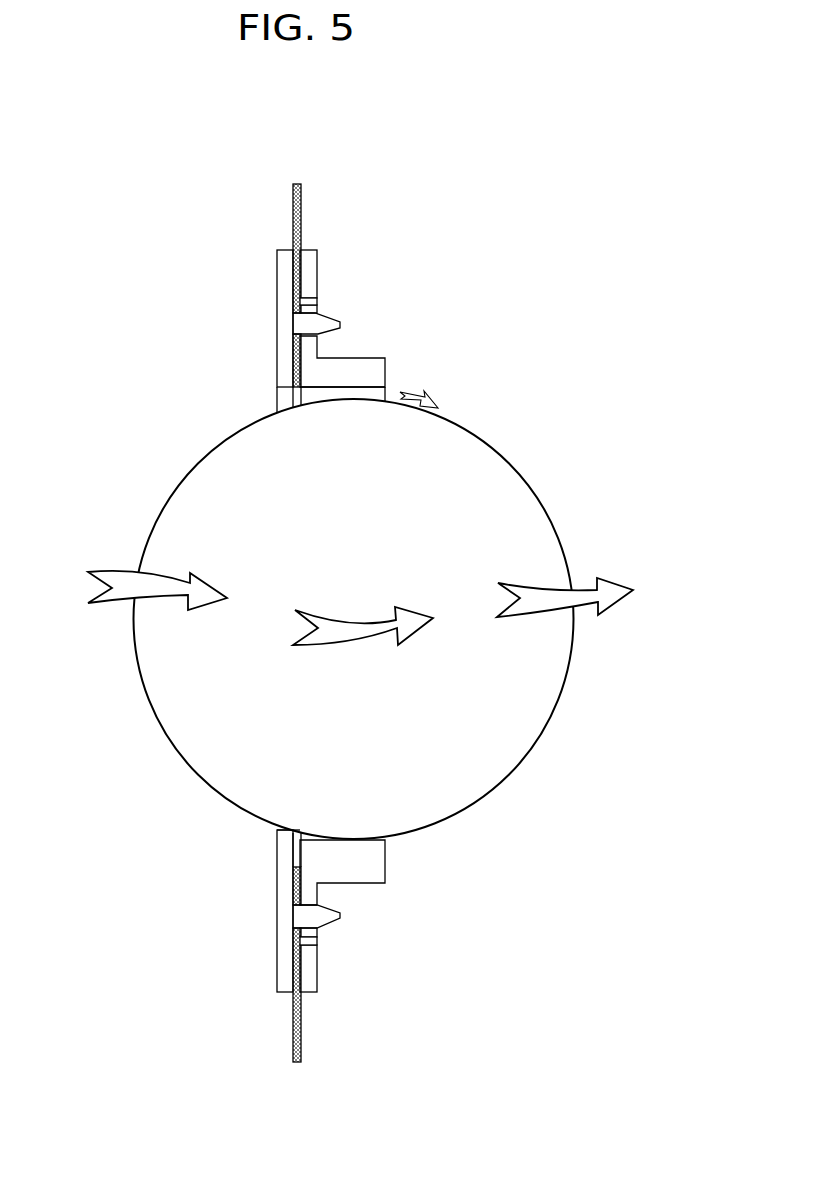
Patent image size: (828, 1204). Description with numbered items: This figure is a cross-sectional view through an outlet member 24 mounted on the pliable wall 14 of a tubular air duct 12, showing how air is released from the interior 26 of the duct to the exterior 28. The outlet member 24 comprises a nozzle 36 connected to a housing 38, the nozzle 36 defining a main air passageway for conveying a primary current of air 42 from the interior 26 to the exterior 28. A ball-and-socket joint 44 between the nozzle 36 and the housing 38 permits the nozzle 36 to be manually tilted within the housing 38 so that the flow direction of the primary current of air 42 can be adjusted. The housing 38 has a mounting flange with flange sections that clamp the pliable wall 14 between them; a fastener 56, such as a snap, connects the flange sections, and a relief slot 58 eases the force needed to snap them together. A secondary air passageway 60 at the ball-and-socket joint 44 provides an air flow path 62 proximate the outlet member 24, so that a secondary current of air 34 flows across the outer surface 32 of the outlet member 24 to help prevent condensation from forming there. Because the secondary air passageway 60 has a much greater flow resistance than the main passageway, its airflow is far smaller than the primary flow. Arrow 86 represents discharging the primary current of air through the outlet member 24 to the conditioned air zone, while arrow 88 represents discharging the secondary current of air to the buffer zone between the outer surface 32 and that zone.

The tubular air duct 12 is at (293, 201).
The pliable wall 14 is at (293, 231).
The outlet member 24 is at (362, 884).
The interior 26 is at (76, 696).
The exterior 28 is at (604, 472).
The outer surface 32 is at (358, 358).
The secondary current of air 34 is at (405, 394).
The nozzle 36 is at (523, 765).
The housing 38 is at (388, 366).
The primary current of air 42 is at (583, 605).
The ball-and-socket joint 44 is at (345, 838).
The fastener 56 is at (332, 313).
The relief slot 58 is at (317, 298).
The secondary air passageway 60 is at (318, 393).
The air flow path 62 is at (388, 400).
The arrow 86 is at (608, 578).
The arrow 88 is at (440, 409).